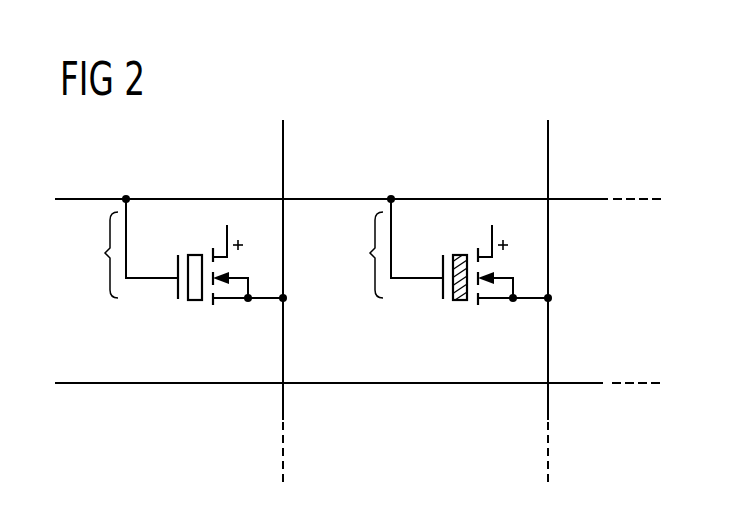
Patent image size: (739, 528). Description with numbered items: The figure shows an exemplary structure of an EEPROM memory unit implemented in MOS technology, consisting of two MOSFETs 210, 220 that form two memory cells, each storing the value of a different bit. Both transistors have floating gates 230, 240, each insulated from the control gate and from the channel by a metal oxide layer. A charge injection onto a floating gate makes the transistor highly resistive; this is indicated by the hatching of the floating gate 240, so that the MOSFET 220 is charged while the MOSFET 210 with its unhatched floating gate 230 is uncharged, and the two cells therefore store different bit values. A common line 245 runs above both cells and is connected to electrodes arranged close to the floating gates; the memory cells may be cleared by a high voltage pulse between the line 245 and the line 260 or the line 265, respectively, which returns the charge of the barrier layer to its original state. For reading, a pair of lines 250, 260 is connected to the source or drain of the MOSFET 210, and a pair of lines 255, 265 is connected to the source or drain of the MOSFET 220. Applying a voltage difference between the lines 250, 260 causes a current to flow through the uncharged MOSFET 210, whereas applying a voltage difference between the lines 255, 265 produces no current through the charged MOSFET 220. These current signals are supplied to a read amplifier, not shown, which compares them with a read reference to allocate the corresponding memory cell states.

The line 245 is at (79, 197).
The MOSFET 210 is at (172, 282).
The MOSFET 220 is at (437, 282).
The line 250 is at (224, 238).
The line 255 is at (489, 238).
The floating gate 230 is at (197, 302).
The floating gate 240 is at (462, 302).
The line 260 is at (283, 408).
The line 265 is at (548, 408).